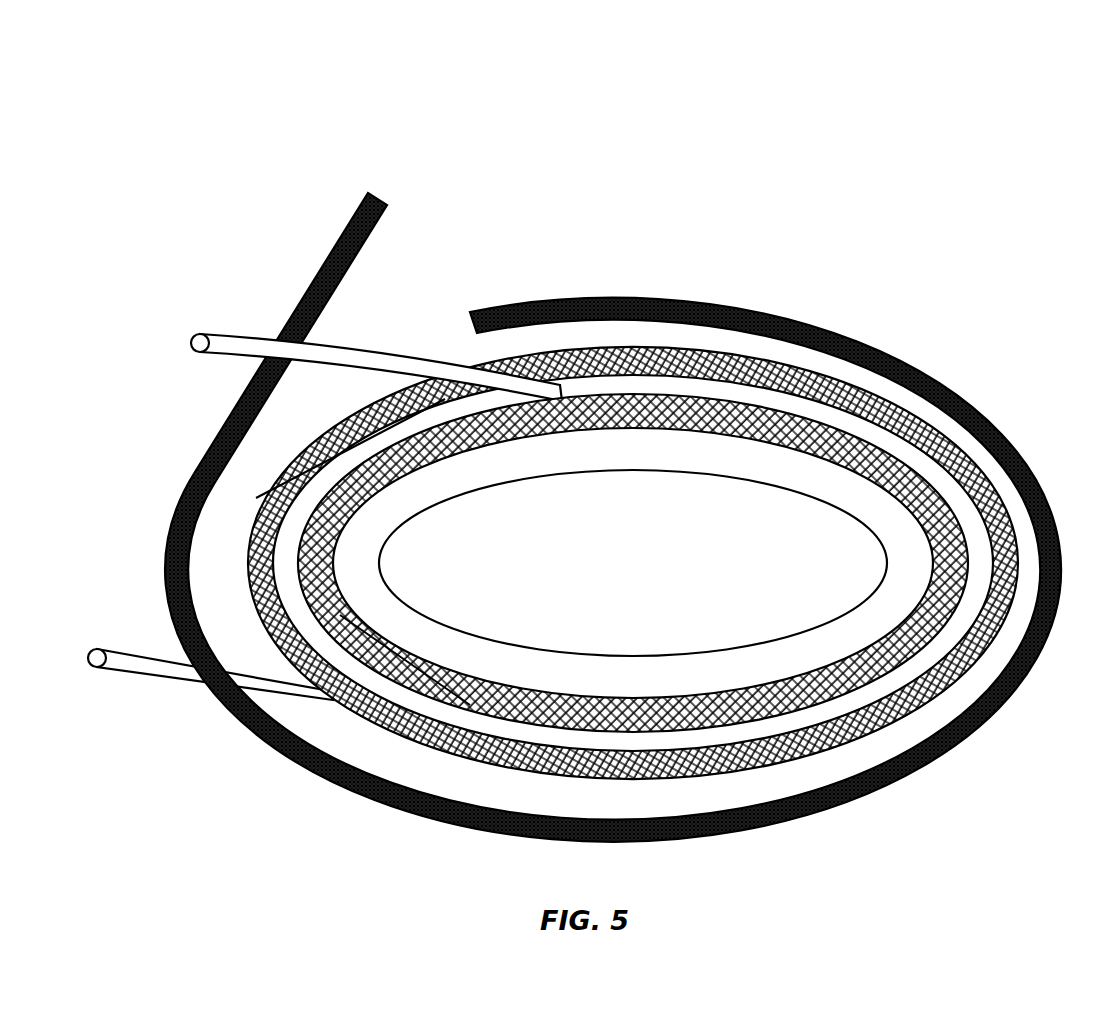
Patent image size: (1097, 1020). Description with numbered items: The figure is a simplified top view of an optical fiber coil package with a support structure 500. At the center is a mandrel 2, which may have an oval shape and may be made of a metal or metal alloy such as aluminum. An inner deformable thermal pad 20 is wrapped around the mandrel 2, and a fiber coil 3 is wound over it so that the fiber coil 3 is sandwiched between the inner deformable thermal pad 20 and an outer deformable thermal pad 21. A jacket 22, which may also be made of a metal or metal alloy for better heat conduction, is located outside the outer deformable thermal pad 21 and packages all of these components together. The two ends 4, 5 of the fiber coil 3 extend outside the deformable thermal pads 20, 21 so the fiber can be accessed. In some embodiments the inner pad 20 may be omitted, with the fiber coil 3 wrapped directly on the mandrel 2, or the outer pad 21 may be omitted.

The coil package with a support structure 500 is at (829, 76).
The mandrel 2 is at (400, 603).
The fiber coil 3 is at (317, 480).
The end of the fiber coil 4 is at (201, 333).
The end of the fiber coil 5 is at (127, 673).
The inner deformable thermal pad 20 is at (290, 530).
The outer deformable thermal pad 21 is at (330, 433).
The jacket 22 is at (339, 240).